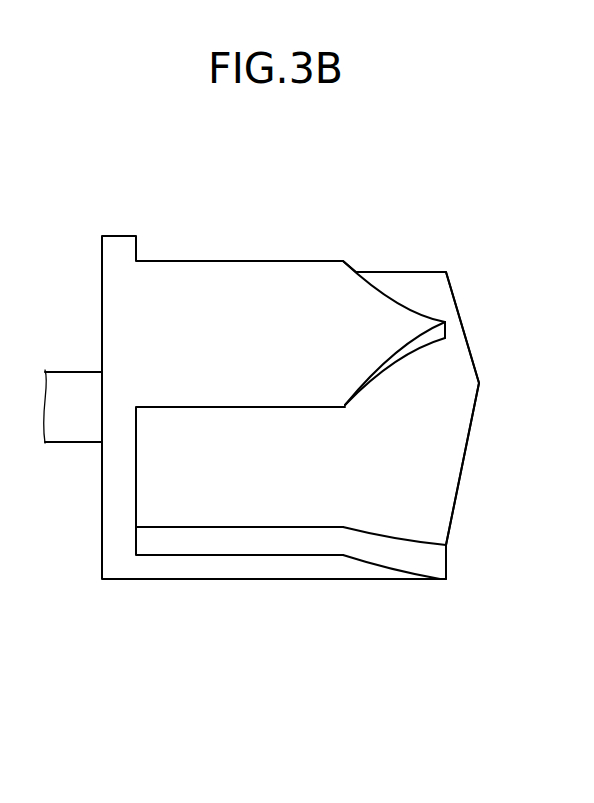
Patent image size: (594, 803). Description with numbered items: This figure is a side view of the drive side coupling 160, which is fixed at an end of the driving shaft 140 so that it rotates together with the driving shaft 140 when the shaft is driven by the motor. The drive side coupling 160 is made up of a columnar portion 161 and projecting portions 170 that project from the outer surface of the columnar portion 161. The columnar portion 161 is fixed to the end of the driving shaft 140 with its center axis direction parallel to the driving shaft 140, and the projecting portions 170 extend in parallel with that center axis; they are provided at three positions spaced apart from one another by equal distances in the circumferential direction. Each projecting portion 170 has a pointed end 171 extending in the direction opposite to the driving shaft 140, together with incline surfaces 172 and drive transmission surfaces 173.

The driving shaft 140 is at (73, 383).
The drive side coupling 160 is at (123, 195).
The columnar portion 161 is at (466, 450).
The projecting portion 170 is at (227, 259).
The pointed end 171 is at (447, 330).
The incline surface 172 is at (388, 292).
The drive transmission surface 173 is at (199, 408).